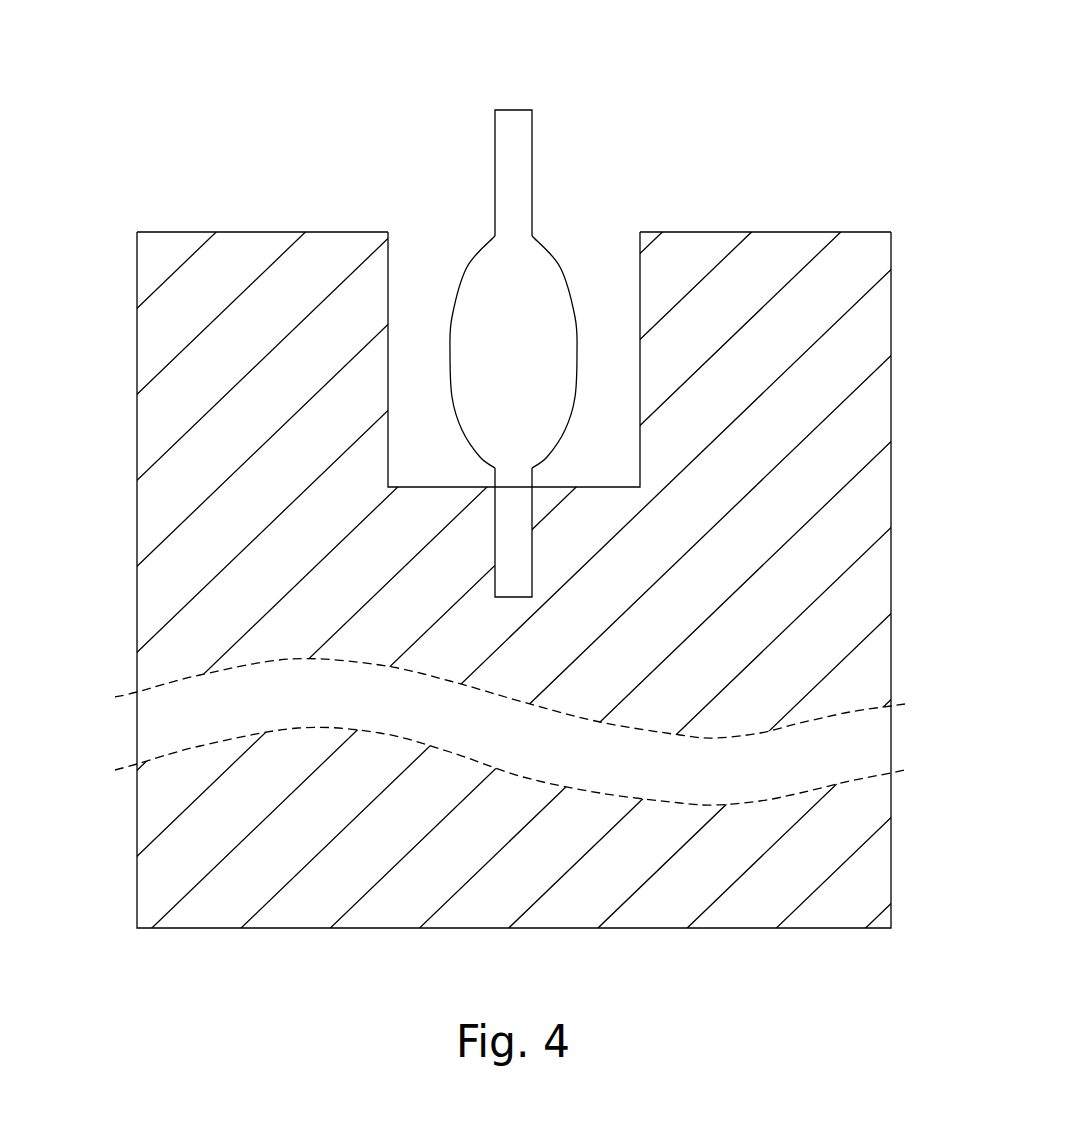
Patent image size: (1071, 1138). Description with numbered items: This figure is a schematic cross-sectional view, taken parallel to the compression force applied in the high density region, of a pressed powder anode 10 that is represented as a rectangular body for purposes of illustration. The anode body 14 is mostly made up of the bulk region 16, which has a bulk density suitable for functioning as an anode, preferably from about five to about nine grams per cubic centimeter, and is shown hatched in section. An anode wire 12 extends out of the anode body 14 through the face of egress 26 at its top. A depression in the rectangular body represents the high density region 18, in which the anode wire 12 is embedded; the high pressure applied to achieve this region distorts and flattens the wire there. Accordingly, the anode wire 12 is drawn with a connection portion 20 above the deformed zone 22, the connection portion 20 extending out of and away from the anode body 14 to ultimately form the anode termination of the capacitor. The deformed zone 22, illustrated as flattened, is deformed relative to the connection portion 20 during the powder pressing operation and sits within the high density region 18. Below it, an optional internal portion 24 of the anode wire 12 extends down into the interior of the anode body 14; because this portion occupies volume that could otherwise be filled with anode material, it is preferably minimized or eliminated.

The pressed powder anode 10 is at (500, 569).
The anode wire 12 is at (664, 299).
The anode body 14 is at (486, 569).
The bulk region 16 is at (731, 303).
The high density region 18 is at (590, 265).
The connection portion 20 is at (512, 167).
The deformed zone 22 is at (510, 293).
The internal portion 24 is at (513, 551).
The face of egress 26 is at (265, 232).